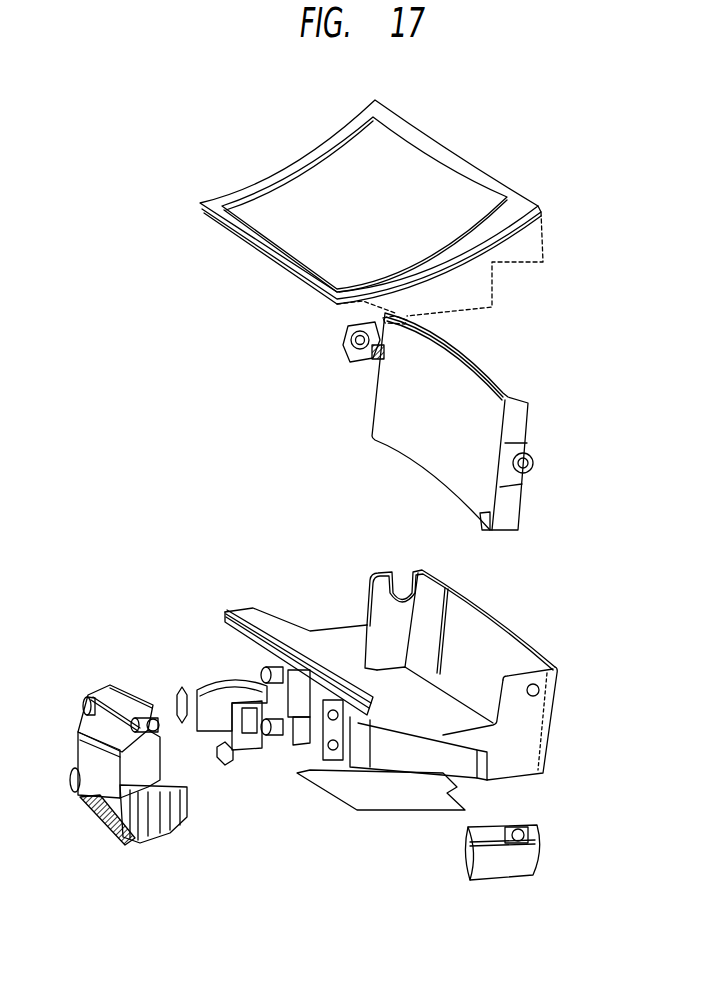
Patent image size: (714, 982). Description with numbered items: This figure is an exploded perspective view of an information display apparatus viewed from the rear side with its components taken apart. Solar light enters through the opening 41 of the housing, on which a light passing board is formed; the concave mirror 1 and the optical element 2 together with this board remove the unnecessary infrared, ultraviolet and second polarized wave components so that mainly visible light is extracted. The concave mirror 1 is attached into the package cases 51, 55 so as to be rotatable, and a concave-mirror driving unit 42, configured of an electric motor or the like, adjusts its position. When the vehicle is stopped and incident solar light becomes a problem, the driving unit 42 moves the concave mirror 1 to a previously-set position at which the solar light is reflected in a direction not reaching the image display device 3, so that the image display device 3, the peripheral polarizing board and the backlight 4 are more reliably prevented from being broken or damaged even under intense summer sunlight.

The opening 41 is at (300, 187).
The package case 51 is at (530, 237).
The concave mirror 1 is at (382, 410).
The package case 55 is at (533, 725).
The optical element 2 is at (212, 693).
The image display device 3 is at (132, 690).
The backlight 4 is at (92, 706).
The concave-mirror driving unit 42 is at (533, 865).